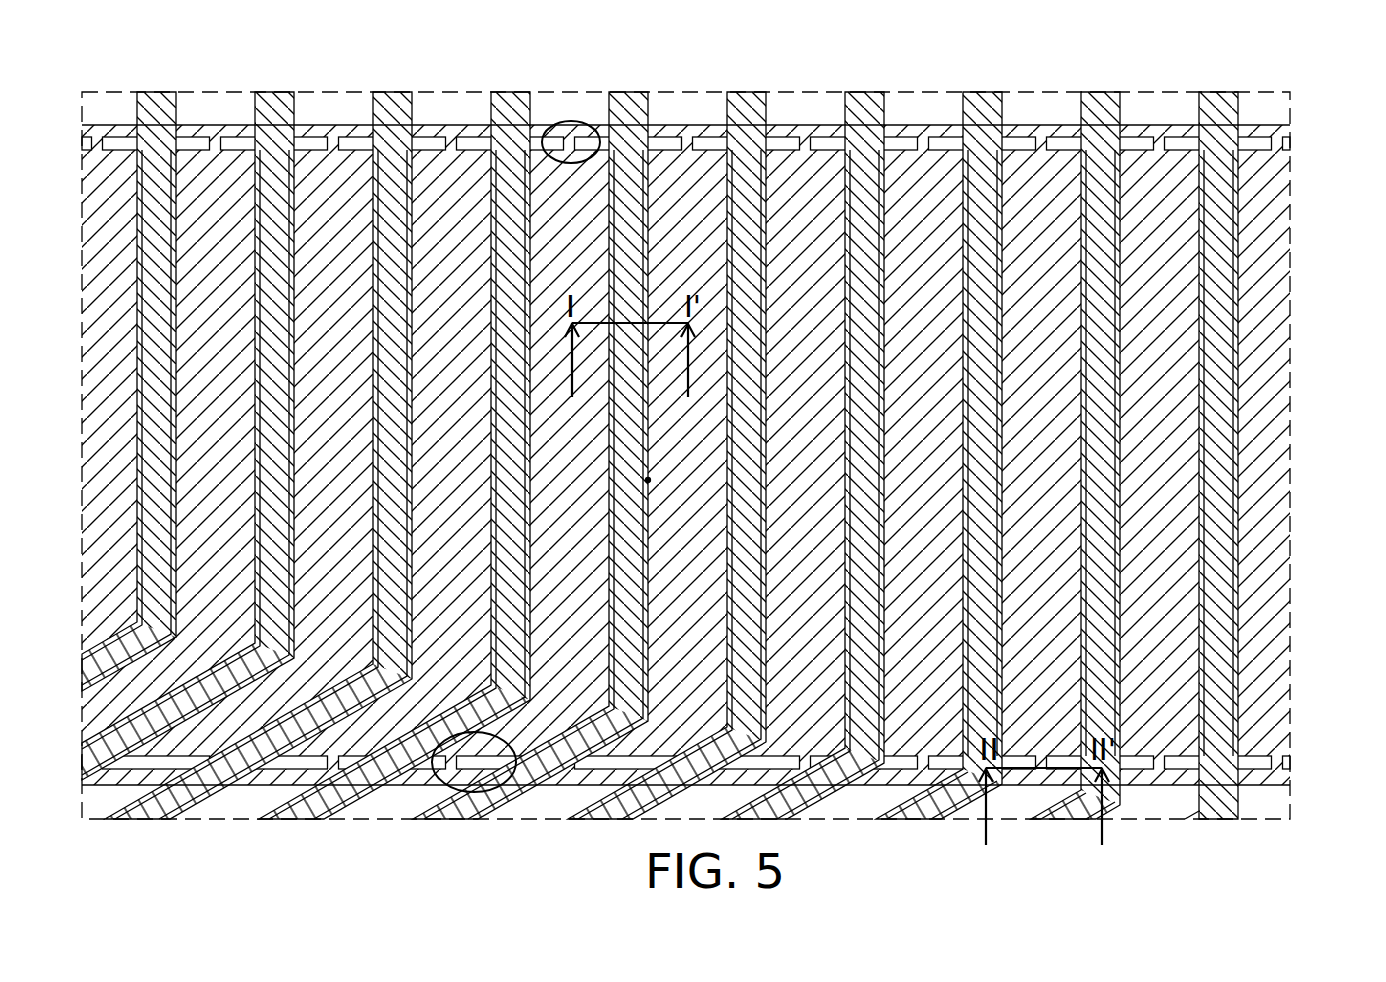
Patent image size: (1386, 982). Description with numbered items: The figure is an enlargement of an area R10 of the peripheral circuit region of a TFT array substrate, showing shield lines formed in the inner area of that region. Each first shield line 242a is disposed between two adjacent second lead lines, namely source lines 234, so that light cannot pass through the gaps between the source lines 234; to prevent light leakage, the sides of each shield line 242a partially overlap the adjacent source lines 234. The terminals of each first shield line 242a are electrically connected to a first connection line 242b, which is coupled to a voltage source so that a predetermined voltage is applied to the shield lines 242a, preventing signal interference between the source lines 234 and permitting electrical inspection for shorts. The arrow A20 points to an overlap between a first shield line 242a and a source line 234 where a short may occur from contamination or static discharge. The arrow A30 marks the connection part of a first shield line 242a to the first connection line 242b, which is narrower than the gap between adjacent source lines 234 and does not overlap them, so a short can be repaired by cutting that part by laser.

The first shield line 242a is at (1177, 637).
The first connection line 242b is at (241, 126).
The second lead line (source line) 234 is at (1217, 708).
The arrow marking connection part of first shield line A30 is at (547, 170).
The arrow marking overlap A20 is at (655, 487).
The area R10 is at (1288, 883).